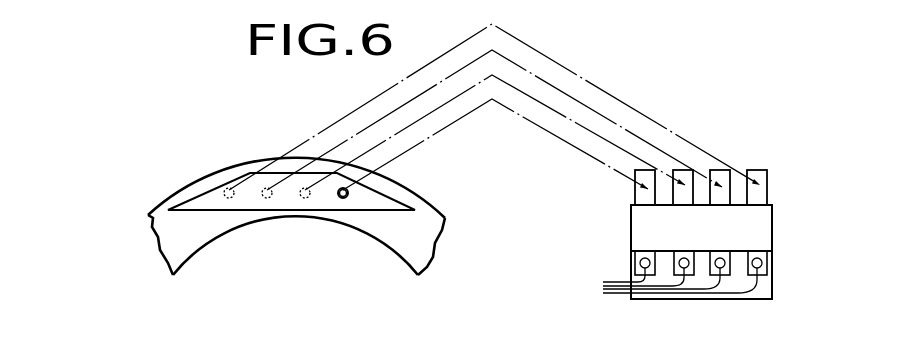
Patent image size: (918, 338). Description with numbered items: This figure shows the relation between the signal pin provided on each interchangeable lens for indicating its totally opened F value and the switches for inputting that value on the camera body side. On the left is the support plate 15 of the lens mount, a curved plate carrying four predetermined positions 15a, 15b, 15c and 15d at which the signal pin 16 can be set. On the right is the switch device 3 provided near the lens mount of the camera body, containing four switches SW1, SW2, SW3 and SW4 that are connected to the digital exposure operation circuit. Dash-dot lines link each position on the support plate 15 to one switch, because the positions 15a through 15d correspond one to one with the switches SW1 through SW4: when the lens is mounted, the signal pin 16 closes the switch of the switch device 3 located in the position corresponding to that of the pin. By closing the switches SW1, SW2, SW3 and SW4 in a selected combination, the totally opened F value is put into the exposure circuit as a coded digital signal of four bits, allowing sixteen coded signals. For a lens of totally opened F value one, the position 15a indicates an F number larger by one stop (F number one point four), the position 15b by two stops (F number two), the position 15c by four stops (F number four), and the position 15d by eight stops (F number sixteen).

The support plate 15 is at (393, 200).
The position on the support plate 15a is at (345, 198).
The position on the support plate 15b is at (305, 199).
The position on the support plate 15c is at (267, 199).
The position on the support plate 15d is at (229, 199).
The signal pin 16 is at (343, 200).
The switch device 3 is at (650, 233).
The switch SW1 is at (636, 190).
The switch SW2 is at (685, 203).
The switch SW3 is at (717, 168).
The switch SW4 is at (758, 168).